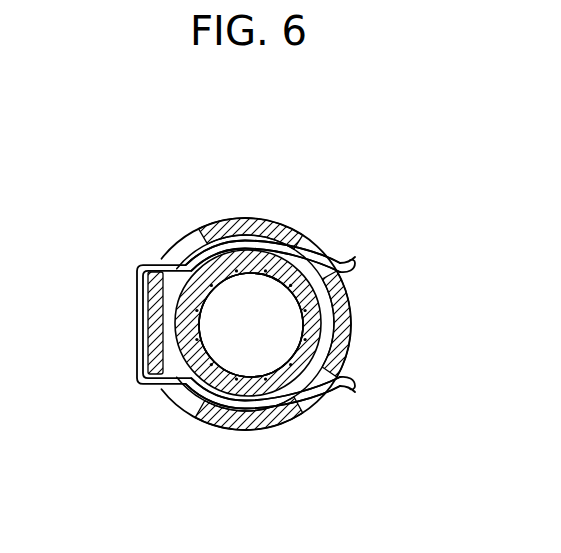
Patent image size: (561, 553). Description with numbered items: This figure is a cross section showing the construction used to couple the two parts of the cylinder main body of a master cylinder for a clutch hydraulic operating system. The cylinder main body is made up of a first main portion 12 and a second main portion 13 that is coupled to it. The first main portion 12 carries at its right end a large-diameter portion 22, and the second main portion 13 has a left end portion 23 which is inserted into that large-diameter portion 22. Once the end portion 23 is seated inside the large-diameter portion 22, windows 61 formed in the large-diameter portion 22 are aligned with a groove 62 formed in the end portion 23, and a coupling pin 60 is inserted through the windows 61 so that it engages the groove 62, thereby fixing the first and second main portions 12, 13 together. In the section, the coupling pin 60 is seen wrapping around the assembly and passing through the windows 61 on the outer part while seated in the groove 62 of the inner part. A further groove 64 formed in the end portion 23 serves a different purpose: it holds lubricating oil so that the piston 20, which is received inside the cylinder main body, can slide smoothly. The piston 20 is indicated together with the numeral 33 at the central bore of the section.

The first main portion 12 is at (272, 425).
The second main portion 13 is at (330, 333).
The piston 20 is at (238, 353).
The shaft 33 is at (251, 325).
The large-diameter portion 22 is at (245, 220).
The left end portion 23 is at (322, 293).
The coupling pin 60 is at (132, 305).
The windows 61 is at (314, 243).
The groove 62 is at (168, 351).
The groove 64 is at (313, 357).